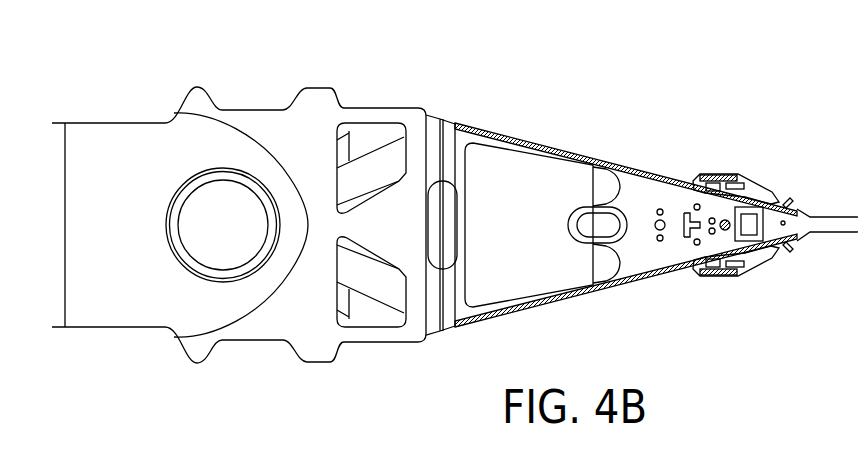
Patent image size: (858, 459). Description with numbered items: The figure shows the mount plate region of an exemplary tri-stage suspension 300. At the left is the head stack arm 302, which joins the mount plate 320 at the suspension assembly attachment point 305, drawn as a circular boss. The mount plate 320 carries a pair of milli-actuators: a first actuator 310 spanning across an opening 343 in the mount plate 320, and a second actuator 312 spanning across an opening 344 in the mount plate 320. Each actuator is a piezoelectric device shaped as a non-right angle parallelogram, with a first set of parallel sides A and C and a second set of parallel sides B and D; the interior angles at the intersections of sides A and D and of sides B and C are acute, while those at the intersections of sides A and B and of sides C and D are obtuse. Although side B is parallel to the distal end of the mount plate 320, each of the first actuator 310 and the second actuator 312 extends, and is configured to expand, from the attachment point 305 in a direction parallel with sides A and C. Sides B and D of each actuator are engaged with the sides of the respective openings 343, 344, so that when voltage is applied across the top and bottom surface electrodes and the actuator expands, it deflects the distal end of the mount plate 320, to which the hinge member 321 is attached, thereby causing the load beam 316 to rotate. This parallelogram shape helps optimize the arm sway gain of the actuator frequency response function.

The suspension 300 is at (590, 105).
The head stack arm 302 is at (111, 311).
The suspension assembly attachment point 305 is at (223, 225).
The first actuator 310 is at (378, 152).
The second actuator 312 is at (370, 283).
The load beam 316 is at (540, 145).
The mount plate 320 is at (259, 318).
The hinge member 321 is at (450, 280).
The opening 343 is at (363, 120).
The opening 344 is at (357, 332).